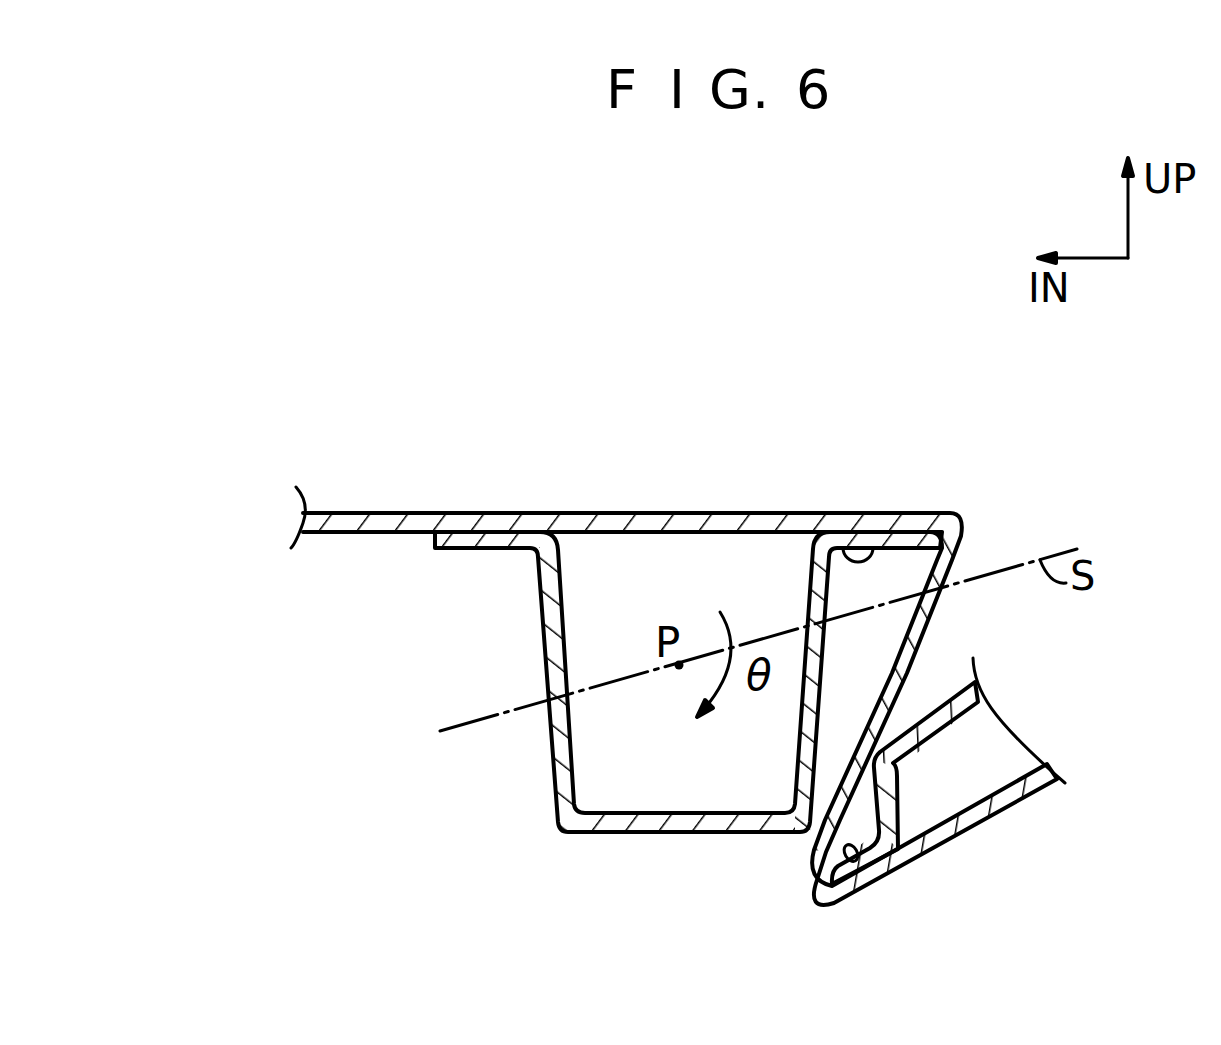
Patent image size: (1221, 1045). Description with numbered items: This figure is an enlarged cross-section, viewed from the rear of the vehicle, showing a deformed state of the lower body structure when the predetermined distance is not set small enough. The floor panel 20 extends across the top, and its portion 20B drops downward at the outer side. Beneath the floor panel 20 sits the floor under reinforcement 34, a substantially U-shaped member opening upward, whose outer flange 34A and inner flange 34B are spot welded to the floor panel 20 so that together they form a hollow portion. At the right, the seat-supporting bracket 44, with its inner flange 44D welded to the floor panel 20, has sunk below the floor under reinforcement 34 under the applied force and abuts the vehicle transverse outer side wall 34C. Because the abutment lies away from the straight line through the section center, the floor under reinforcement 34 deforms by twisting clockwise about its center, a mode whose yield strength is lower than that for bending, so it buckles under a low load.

The floor panel 20 is at (675, 657).
The inclined wall portion of floor panel 20B is at (950, 643).
The floor under reinforcement 34 is at (664, 693).
The outer flange 34A is at (833, 518).
The inner flange 34B is at (482, 549).
The vehicle transverse outer side wall 34C is at (822, 700).
The seat-supporting bracket 44 is at (948, 777).
The inner flange 44D is at (866, 876).